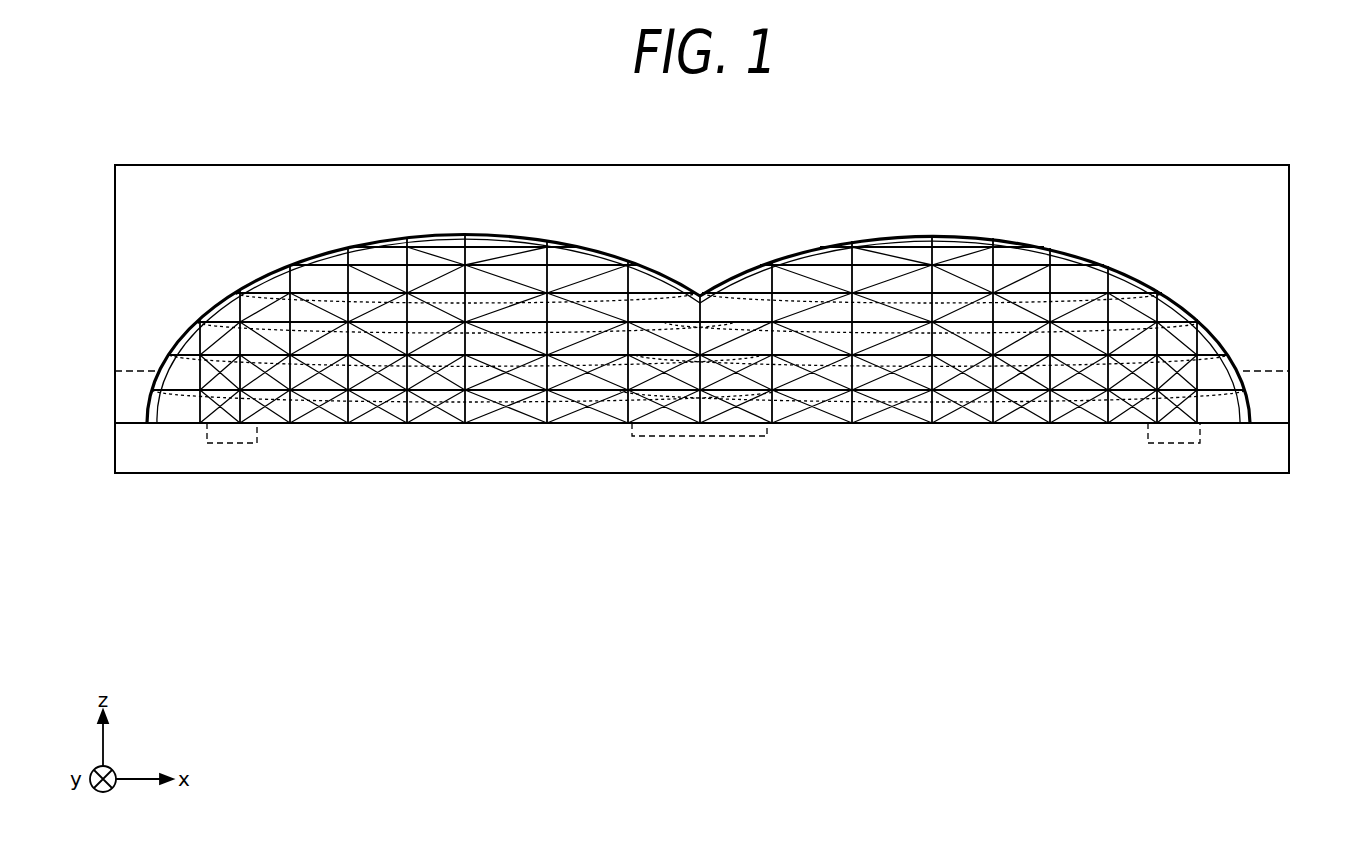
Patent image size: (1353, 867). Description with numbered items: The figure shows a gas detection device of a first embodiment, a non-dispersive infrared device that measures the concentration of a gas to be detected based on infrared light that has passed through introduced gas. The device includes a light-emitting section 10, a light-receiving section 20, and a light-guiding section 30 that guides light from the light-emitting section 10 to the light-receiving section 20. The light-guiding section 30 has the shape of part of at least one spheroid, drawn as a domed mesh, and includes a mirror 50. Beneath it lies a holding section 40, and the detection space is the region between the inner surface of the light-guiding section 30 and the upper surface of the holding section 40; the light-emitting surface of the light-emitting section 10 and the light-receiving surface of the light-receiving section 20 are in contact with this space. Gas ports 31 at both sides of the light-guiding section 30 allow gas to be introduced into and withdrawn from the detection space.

The light-emitting section 10 is at (230, 443).
The light-receiving section 20 is at (1173, 443).
The light-guiding section 30 is at (980, 236).
The gas ports 31 is at (134, 371).
The holding section 40 is at (568, 473).
The mirror 50 is at (700, 438).